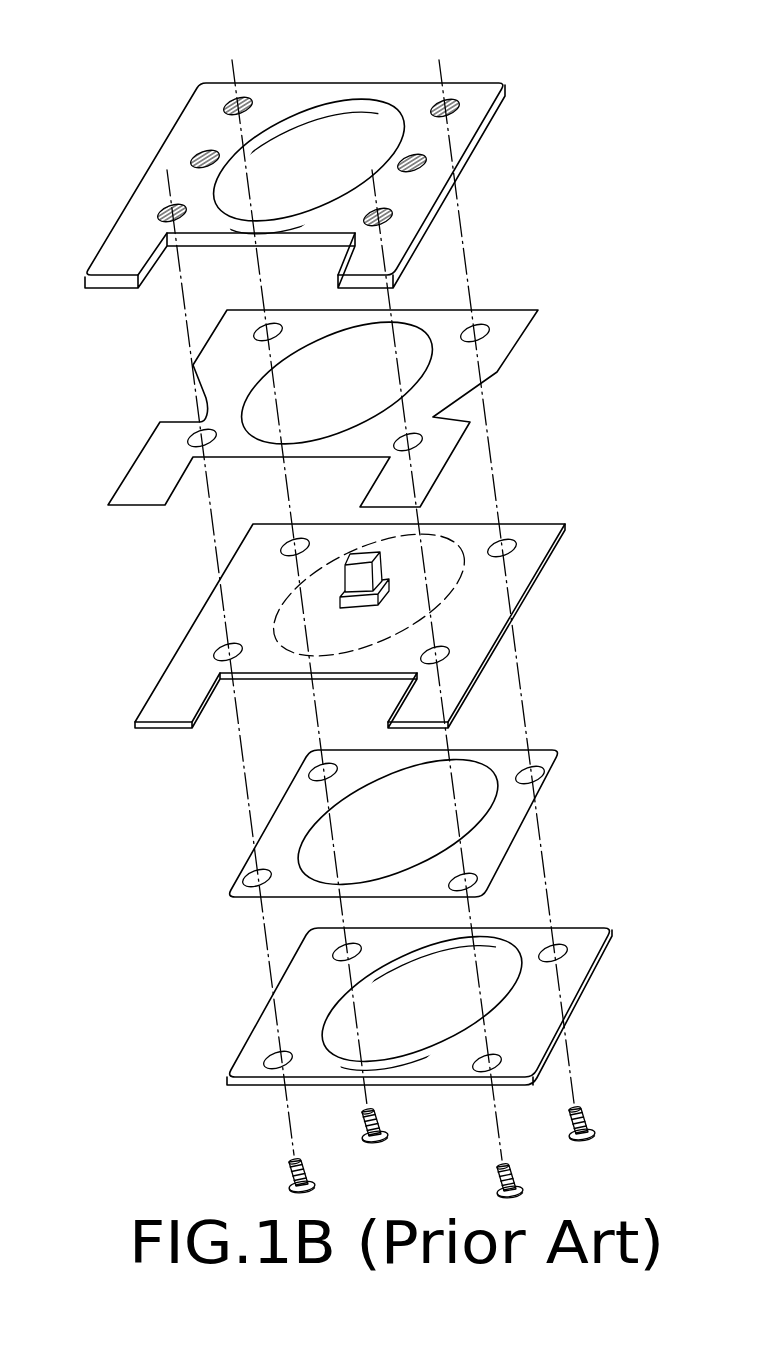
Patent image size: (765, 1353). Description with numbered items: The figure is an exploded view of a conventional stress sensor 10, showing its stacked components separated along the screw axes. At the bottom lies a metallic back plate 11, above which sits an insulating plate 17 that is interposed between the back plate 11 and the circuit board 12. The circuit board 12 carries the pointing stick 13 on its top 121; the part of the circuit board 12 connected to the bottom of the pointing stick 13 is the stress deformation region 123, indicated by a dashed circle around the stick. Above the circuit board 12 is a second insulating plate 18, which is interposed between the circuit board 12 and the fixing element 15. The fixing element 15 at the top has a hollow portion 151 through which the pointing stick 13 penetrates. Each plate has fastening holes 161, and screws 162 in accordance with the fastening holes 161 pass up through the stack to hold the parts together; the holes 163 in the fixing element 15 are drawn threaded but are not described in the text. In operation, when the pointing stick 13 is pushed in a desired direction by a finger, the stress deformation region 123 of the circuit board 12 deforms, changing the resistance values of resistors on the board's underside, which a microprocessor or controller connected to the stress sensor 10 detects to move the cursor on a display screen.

The stress sensor 10 is at (640, 76).
The metallic back plate 11 is at (565, 975).
The circuit board 12 is at (375, 626).
The top of the circuit board 121 is at (530, 568).
The stress deformation region 123 is at (440, 538).
The pointing stick 13 is at (343, 573).
The fixing element 15 is at (125, 218).
The hollow portion 151 is at (320, 85).
The fastening holes 161 is at (455, 104).
The screws 162 is at (587, 1112).
The threaded holes 163 is at (196, 157).
The insulating plate 17 is at (545, 795).
The insulating plate 18 is at (510, 340).